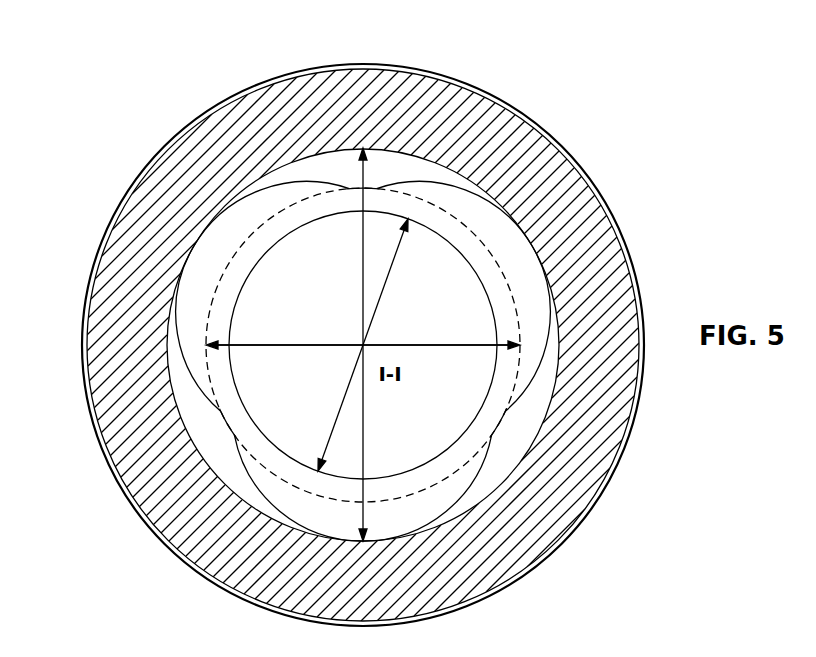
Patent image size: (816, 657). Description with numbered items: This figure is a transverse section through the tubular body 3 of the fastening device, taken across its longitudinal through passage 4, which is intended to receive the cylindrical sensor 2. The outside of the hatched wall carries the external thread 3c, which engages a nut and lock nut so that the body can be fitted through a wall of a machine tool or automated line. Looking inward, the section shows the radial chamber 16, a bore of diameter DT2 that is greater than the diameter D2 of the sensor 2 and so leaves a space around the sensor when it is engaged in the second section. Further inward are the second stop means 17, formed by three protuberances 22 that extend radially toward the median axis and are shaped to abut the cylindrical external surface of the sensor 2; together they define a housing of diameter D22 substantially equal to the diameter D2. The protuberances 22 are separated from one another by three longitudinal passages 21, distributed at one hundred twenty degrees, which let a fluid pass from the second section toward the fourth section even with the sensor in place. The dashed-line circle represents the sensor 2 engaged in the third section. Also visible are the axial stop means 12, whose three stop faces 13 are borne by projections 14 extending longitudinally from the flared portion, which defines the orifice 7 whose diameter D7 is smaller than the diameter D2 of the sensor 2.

The sensor 2 is at (250, 228).
The tubular body 3 is at (521, 89).
The external thread 3c is at (541, 127).
The longitudinal through passage 4 is at (250, 321).
The orifice 7 is at (252, 282).
The axial stop means 12 is at (372, 212).
The stop face 13 is at (345, 197).
The projection 14 is at (355, 195).
The radial chamber 16 is at (293, 178).
The second stop means 17 is at (378, 186).
The longitudinal passage 21 is at (531, 246).
The protuberance 22 is at (352, 162).
The diameter of the radial chamber bore DT2 is at (363, 278).
The diameter of the sensor D2 is at (363, 318).
The diameter of the housing defined by the protuberances D22 is at (363, 329).
The diameter of the orifice D7 is at (322, 414).